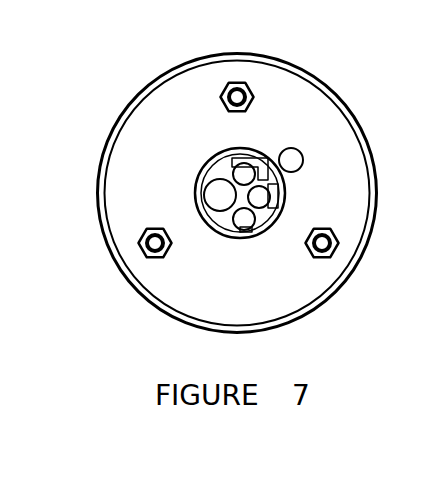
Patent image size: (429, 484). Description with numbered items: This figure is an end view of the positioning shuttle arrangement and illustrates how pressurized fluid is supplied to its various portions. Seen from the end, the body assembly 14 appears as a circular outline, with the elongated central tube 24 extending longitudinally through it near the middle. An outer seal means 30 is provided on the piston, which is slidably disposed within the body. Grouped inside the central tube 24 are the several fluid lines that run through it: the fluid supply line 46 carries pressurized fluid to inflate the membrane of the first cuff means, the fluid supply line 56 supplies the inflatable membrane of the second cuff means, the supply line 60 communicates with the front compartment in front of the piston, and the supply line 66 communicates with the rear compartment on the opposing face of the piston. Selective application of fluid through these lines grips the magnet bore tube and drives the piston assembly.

The body assembly 14 is at (318, 75).
The central tube 24 is at (241, 203).
The outer seal means 30 is at (336, 236).
The fluid supply line 46 is at (243, 221).
The fluid supply line 56 is at (299, 150).
The supply line 60 is at (243, 173).
The supply line 66 is at (261, 199).